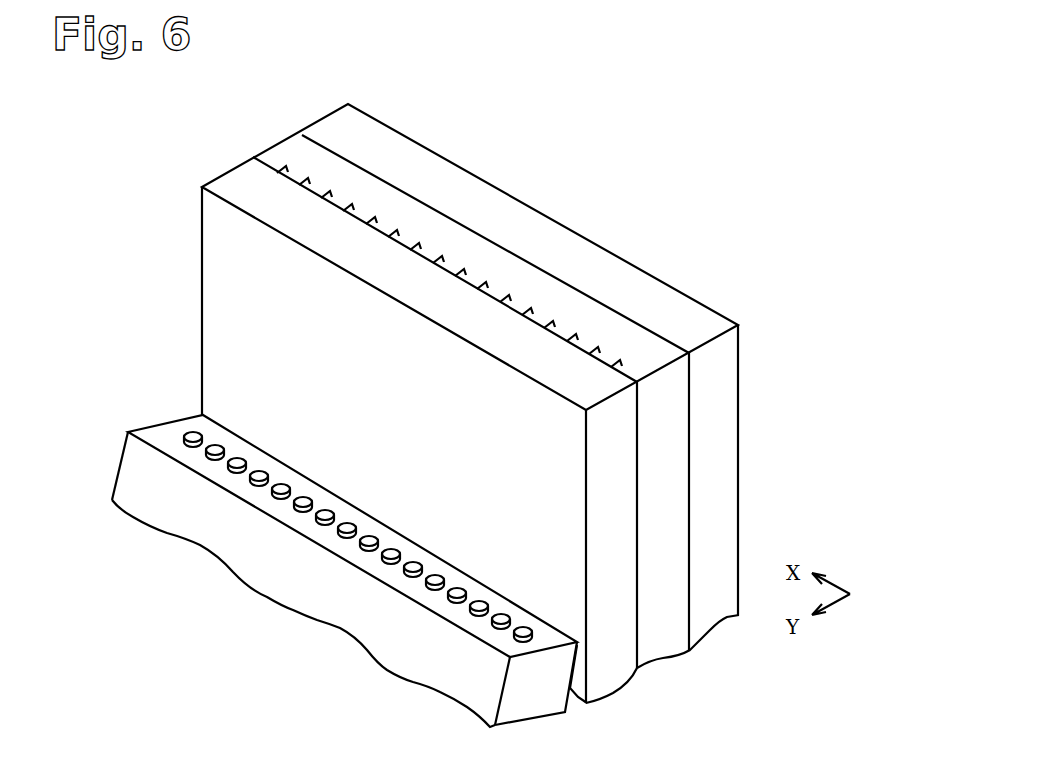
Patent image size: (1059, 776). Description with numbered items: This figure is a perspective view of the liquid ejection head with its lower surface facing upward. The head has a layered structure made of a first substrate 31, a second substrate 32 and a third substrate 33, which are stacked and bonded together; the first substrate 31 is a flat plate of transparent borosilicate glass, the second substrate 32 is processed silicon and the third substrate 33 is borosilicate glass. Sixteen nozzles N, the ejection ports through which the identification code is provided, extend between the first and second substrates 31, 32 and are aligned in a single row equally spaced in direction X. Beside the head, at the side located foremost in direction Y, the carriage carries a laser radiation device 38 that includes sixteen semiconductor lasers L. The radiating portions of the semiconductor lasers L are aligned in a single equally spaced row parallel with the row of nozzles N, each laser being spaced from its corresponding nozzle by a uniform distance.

The first substrate 31 is at (222, 185).
The second substrate 32 is at (633, 337).
The third substrate 33 is at (585, 248).
The laser radiation device 38 is at (153, 432).
The nozzles N is at (307, 187).
The semiconductor lasers L is at (240, 458).